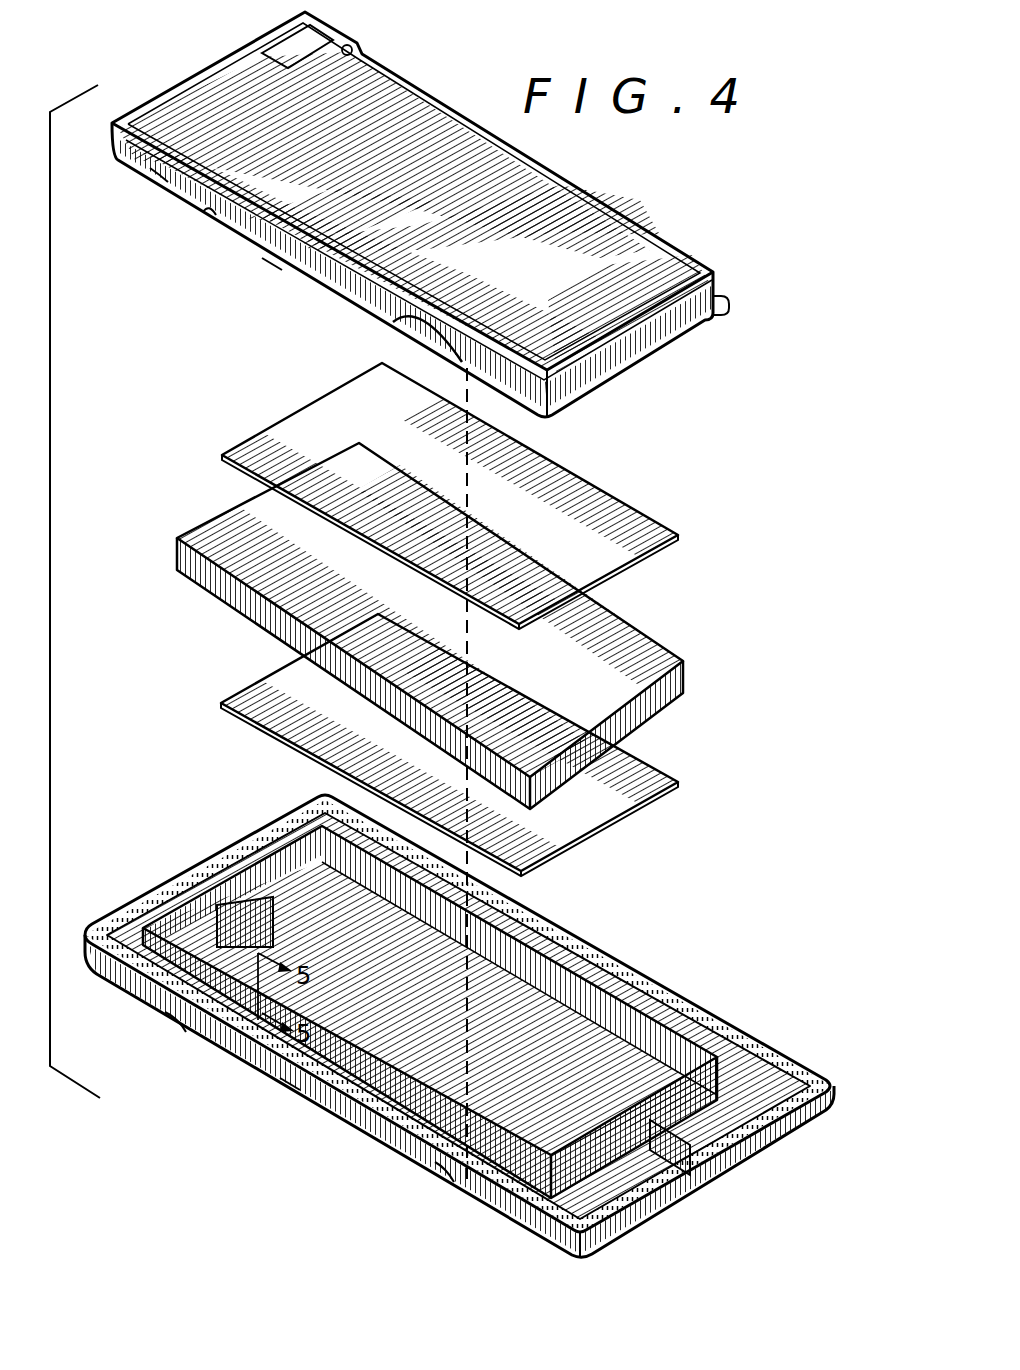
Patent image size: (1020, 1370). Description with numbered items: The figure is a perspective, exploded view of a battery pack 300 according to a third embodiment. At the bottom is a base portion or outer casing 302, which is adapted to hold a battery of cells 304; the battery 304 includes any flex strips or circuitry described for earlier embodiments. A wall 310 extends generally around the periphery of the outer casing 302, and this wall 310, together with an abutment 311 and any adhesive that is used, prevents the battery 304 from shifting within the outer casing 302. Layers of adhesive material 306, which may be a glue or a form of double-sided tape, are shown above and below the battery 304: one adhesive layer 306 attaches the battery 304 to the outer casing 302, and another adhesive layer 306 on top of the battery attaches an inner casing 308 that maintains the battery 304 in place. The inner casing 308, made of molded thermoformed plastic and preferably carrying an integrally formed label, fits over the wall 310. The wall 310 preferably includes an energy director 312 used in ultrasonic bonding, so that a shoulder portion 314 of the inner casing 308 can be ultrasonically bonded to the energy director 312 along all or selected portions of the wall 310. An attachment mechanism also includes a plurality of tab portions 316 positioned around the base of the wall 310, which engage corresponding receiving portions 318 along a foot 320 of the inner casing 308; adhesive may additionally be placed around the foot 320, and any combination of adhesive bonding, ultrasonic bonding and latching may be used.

The battery pack assembly 300 is at (823, 54).
The outer casing 302 is at (700, 1000).
The battery of cells 304 is at (655, 655).
The adhesive layer 306 is at (655, 530).
The inner casing 308 is at (655, 262).
The wall 310 is at (366, 1132).
The abutment 311 is at (238, 840).
The energy director 312 is at (289, 1088).
The shoulder portion 314 is at (272, 262).
The tab portion 316 is at (176, 1025).
The receiving portion 318 is at (209, 218).
The foot 320 is at (158, 193).